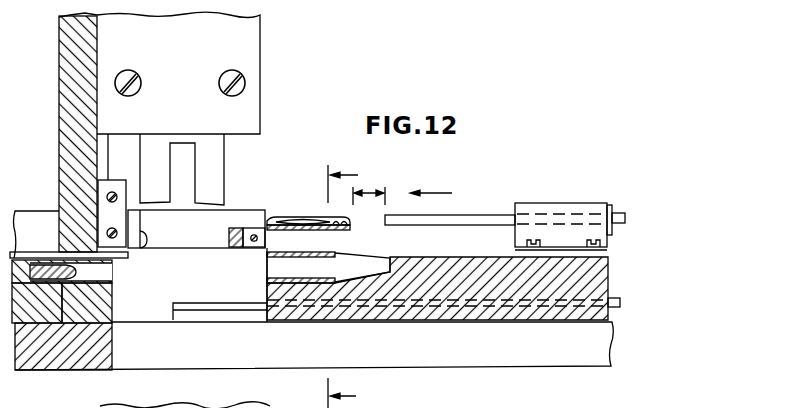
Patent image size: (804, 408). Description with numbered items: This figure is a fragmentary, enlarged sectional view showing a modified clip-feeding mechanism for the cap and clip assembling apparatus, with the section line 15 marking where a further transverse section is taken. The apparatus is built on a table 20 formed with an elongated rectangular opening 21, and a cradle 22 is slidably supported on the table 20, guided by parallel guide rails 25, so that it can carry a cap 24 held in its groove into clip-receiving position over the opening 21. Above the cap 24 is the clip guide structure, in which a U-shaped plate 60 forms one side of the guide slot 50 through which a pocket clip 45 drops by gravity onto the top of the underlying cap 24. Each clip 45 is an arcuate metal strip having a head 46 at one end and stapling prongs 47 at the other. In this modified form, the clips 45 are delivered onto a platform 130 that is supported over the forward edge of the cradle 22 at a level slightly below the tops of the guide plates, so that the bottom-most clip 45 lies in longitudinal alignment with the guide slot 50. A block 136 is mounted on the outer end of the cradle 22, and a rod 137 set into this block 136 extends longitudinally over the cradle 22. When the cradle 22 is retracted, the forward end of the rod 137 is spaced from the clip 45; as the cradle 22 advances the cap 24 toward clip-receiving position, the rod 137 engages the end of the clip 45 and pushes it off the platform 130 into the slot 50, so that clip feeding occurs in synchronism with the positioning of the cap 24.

The section line 15— 15 is at (356, 285).
The table 20 is at (117, 345).
The opening 21 is at (558, 363).
The cradle 22 is at (609, 262).
The cap 24 is at (336, 250).
The guide rails 25 is at (614, 305).
The pocket clip 45 is at (300, 216).
The head 46 is at (271, 216).
The stapling prongs 47 is at (350, 224).
The guide slot 50 is at (146, 249).
The U-shaped plate 60 is at (217, 237).
The platform 130 is at (343, 230).
The block 136 is at (586, 210).
The rod 137 is at (460, 214).